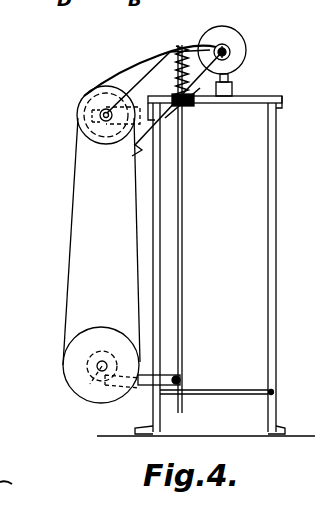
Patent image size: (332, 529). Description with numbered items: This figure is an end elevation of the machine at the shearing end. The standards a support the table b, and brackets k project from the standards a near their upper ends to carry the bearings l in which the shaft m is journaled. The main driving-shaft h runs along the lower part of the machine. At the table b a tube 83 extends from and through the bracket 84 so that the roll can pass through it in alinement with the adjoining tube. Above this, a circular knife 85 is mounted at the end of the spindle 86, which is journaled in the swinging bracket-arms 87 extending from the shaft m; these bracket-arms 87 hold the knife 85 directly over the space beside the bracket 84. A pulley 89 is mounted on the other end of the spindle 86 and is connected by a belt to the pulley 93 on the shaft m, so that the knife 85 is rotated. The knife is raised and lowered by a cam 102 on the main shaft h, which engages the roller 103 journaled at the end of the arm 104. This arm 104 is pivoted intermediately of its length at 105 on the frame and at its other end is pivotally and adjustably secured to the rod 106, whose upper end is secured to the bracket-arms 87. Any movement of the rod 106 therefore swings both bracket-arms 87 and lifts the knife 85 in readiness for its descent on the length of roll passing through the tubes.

The standards a is at (158, 249).
The table b is at (258, 100).
The main driving-shaft h is at (96, 362).
The brackets k is at (137, 146).
The bearings l is at (80, 128).
The shaft m is at (103, 110).
The tube 83 is at (229, 78).
The bracket 84 is at (233, 90).
The circular knife 85 is at (232, 39).
The spindle 86 is at (231, 52).
The swinging bracket-arms 87 is at (166, 50).
The pulley 89 is at (222, 44).
The pulley 93 is at (80, 99).
The cam 102 is at (75, 388).
The roller 103 is at (100, 402).
The arm 104 is at (162, 377).
The pivot 105 is at (142, 386).
The rod 106 is at (181, 197).